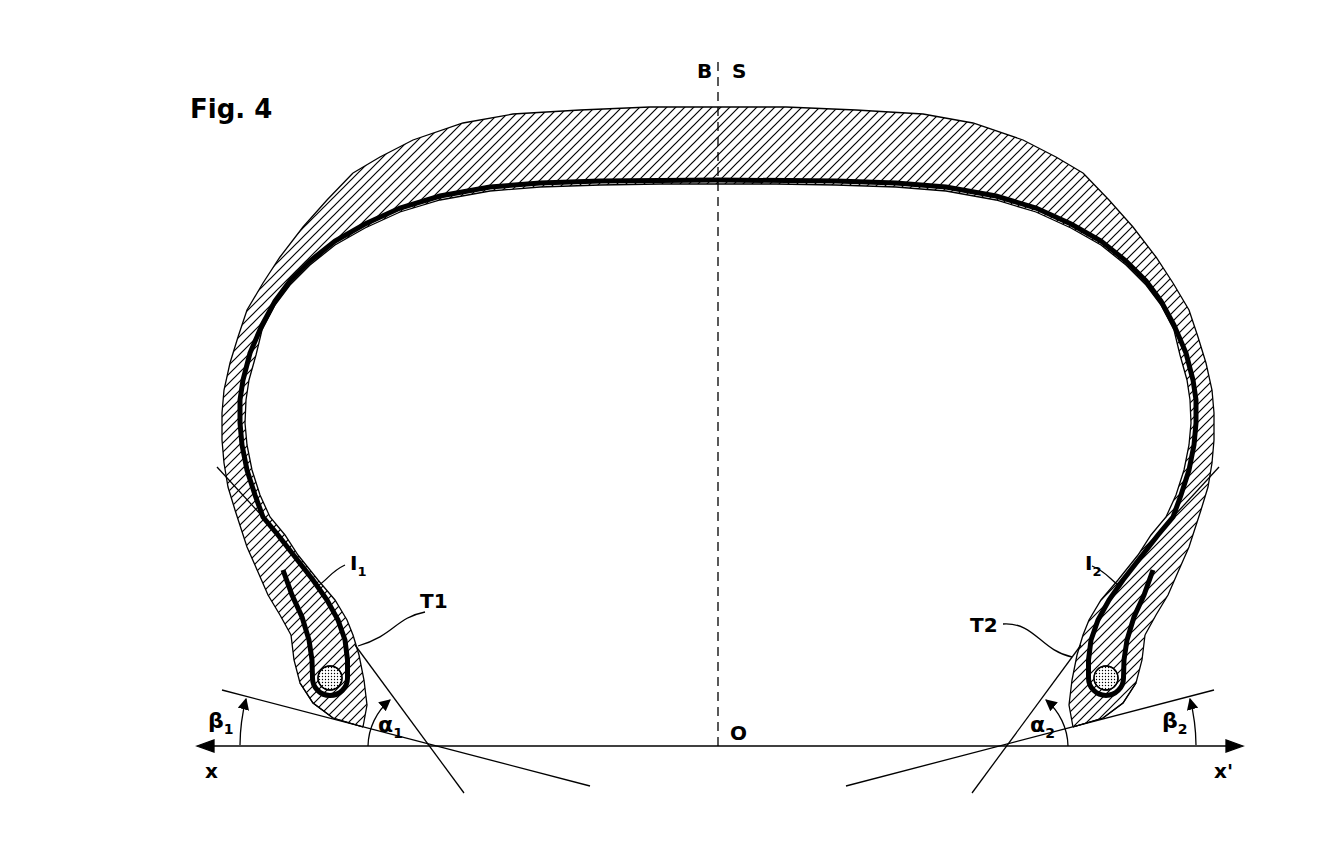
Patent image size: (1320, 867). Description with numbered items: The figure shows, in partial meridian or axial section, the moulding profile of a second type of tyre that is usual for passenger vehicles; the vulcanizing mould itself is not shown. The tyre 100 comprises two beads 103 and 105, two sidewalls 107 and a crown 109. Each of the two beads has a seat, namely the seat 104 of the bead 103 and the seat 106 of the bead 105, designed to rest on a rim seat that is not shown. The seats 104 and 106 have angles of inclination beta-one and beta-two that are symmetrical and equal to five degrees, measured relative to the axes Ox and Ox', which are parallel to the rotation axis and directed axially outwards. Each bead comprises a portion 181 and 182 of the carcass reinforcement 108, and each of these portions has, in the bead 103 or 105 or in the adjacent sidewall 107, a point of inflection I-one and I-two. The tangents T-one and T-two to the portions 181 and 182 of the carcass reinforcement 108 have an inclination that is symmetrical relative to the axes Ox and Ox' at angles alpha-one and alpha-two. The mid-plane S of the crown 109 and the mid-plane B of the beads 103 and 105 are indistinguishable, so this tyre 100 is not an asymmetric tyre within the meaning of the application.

The tyre 100 is at (1138, 90).
The bead 103 is at (293, 640).
The seat 104 is at (353, 724).
The bead 105 is at (1143, 663).
The seat 106 is at (1085, 724).
The sidewall 107 is at (245, 312).
The carcass reinforcement 108 is at (1190, 300).
The crown 109 is at (850, 147).
The portion of the carcass reinforcement 181 is at (292, 569).
The portion of the carcass reinforcement 182 is at (1158, 573).